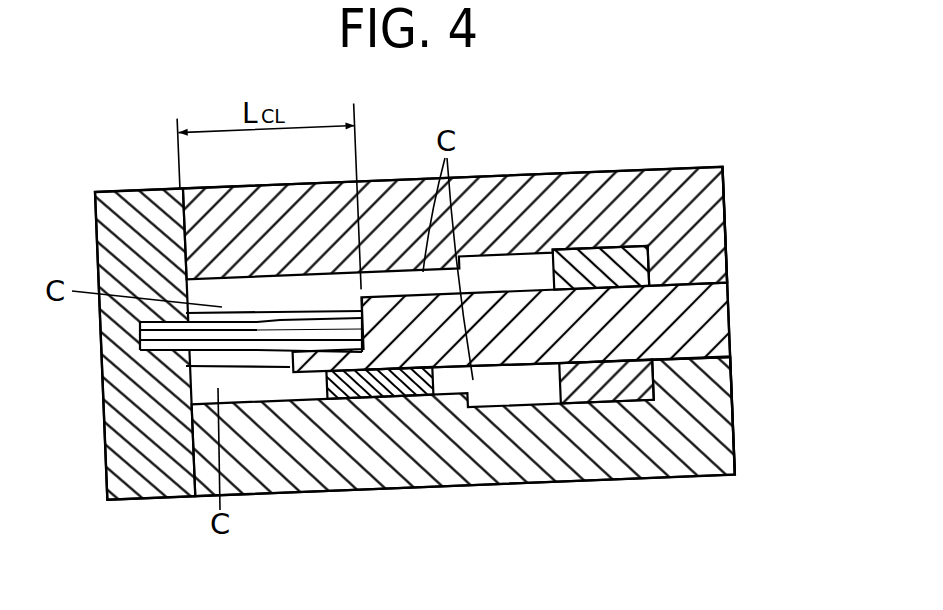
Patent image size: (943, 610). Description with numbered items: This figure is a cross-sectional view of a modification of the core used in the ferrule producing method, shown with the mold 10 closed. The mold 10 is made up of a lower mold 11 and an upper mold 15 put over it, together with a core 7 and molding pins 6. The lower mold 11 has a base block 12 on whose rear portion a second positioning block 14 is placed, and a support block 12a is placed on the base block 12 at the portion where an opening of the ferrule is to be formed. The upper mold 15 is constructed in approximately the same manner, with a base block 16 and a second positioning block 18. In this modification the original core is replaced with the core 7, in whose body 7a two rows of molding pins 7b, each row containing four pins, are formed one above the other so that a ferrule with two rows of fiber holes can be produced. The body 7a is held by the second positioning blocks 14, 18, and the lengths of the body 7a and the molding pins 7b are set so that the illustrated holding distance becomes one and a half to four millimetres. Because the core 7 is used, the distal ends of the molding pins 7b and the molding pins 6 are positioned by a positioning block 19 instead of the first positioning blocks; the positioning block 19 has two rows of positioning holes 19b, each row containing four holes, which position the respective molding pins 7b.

The molding pins 6 is at (257, 365).
The core 7 is at (517, 279).
The body 7a is at (524, 340).
The molding pins 7b is at (280, 340).
The mold 10 is at (800, 265).
The lower mold 11 is at (741, 405).
The base block 12 is at (481, 493).
The support block 12a is at (381, 388).
The second positioning block 14 is at (612, 390).
The upper mold 15 is at (734, 252).
The base block 16 is at (686, 192).
The second positioning block 18 is at (604, 267).
The positioning block 19 is at (135, 190).
The positioning holes 19b is at (143, 347).